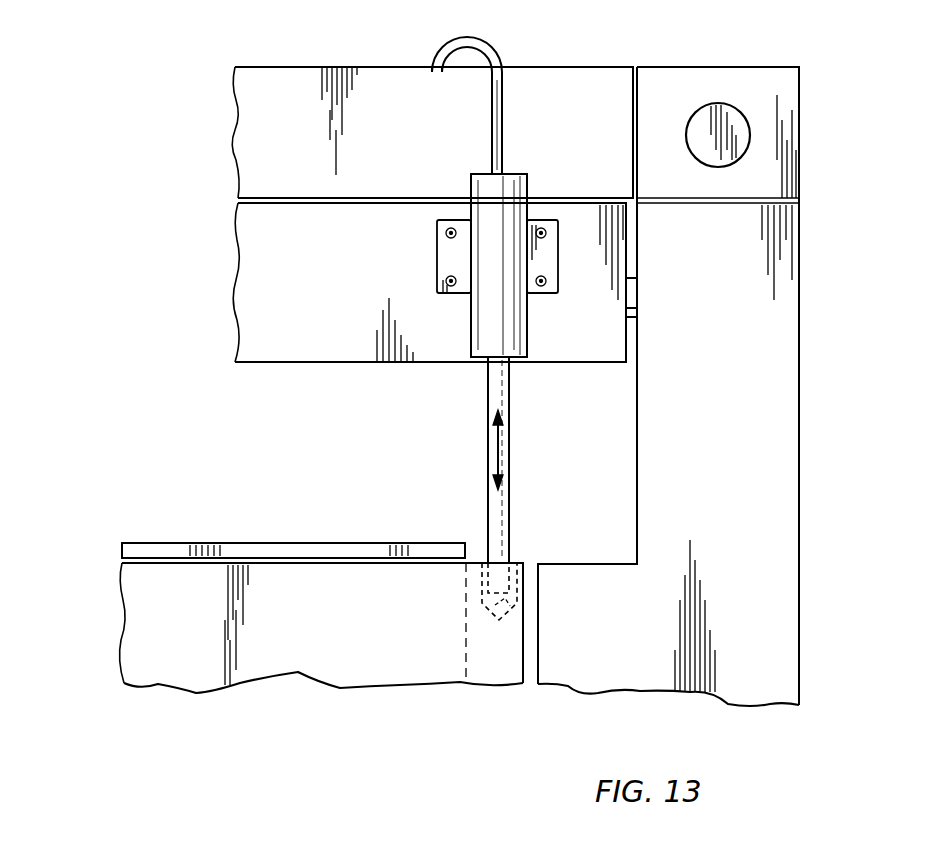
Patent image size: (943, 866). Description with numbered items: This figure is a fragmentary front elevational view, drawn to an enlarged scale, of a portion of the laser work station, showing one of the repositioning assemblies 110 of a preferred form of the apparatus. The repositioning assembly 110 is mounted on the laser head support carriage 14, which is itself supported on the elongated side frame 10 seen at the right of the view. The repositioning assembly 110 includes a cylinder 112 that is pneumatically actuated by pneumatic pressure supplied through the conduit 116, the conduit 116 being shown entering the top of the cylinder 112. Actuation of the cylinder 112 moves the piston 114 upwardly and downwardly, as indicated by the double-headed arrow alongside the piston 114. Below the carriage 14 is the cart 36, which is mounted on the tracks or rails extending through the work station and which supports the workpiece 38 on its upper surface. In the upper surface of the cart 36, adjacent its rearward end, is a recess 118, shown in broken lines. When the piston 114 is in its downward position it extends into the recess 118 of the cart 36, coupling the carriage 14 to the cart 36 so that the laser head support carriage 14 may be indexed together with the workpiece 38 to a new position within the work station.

The side frame 10 is at (763, 527).
The laser head support carriage 14 is at (275, 140).
The cart 36 is at (148, 620).
The workpiece 38 is at (148, 550).
The repositioning assembly 110 is at (440, 258).
The cylinder 112 is at (490, 205).
The piston 114 is at (496, 376).
The conduit 116 is at (503, 52).
The recess 118 is at (506, 618).